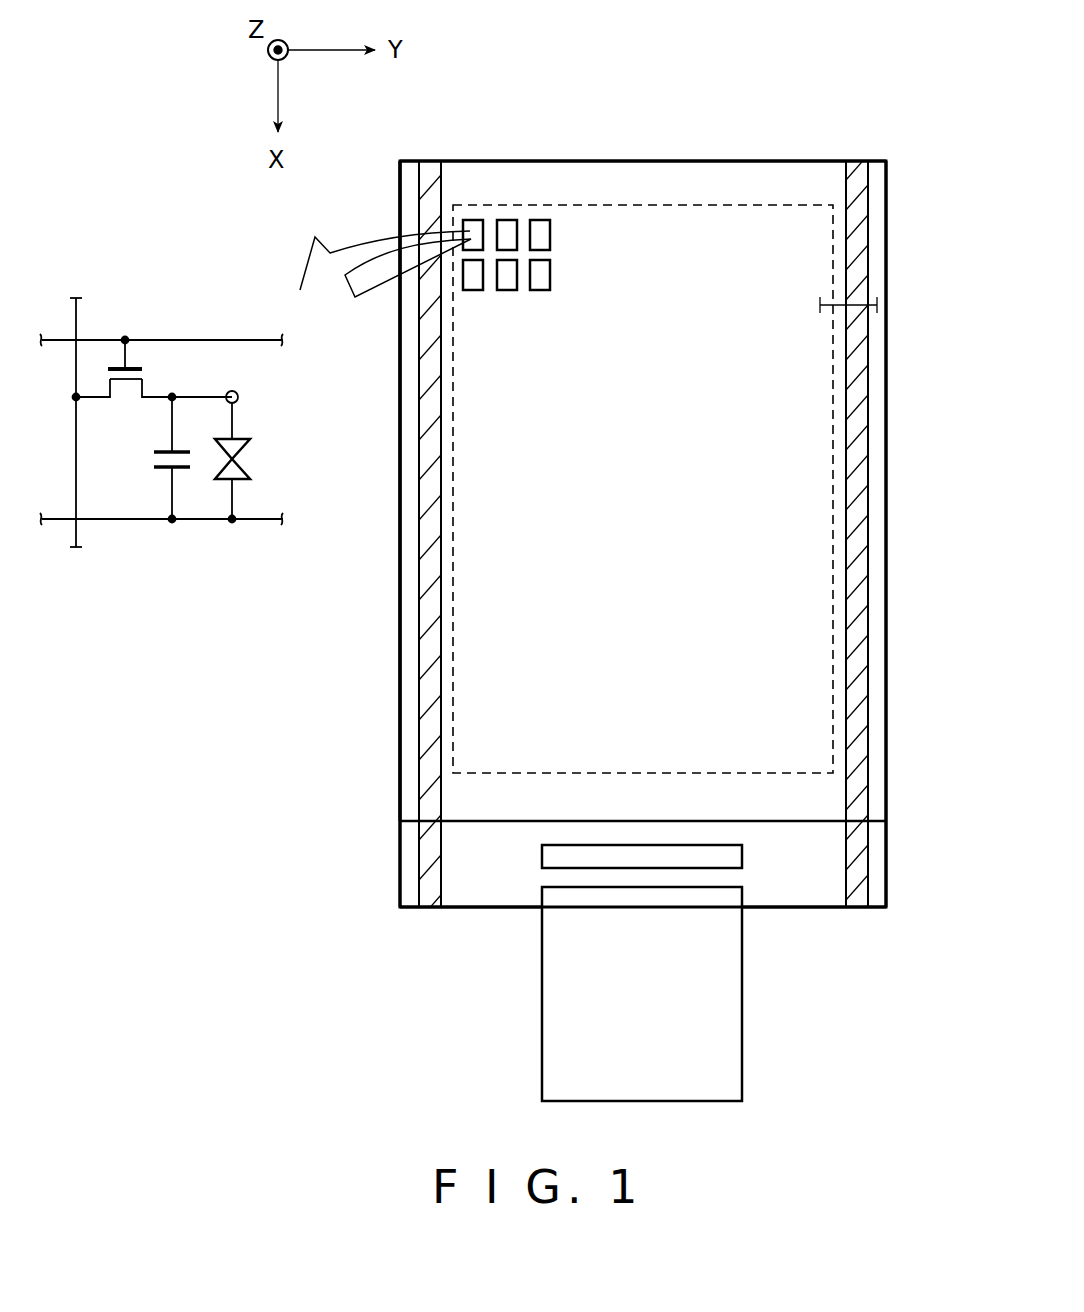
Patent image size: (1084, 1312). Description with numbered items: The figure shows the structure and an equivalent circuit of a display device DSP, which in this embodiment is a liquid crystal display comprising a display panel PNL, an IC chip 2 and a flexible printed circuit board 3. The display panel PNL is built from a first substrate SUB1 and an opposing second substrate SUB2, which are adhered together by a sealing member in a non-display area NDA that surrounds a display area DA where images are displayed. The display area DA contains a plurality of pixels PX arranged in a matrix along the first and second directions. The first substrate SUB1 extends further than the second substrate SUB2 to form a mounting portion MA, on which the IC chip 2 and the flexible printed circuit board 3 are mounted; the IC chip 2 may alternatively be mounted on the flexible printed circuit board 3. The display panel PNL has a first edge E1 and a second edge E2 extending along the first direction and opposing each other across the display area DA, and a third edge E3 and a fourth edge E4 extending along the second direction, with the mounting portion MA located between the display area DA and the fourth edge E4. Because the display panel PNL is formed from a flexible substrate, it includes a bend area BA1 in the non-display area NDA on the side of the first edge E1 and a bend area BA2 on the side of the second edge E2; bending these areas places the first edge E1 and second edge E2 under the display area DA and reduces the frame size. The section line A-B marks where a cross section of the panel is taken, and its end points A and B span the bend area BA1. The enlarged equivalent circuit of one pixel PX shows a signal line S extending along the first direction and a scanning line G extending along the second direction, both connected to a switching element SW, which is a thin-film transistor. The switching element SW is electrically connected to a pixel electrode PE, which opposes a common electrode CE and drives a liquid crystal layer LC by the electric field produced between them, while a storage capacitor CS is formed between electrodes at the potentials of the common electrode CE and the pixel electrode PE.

The display device DSP is at (618, 562).
The display panel PNL is at (618, 525).
The first substrate SUB1 is at (398, 867).
The second substrate SUB2 is at (398, 767).
The first edge E1 is at (888, 390).
The second edge E2 is at (399, 624).
The third edge E3 is at (535, 160).
The fourth edge E4 is at (835, 910).
The bend area BA1 is at (858, 528).
The bend area BA2 is at (425, 700).
The display area DA is at (633, 205).
The non-display area NDA is at (716, 186).
The pixel PX is at (553, 233).
The mounting portion MA is at (812, 872).
The line A-B A is at (845, 319).
The line A- B is at (875, 319).
The IC chip 2 is at (745, 857).
The flexible printed circuit board 3 is at (742, 1025).
The scanning line G is at (65, 338).
The signal line S is at (75, 455).
The common electrode CE is at (262, 523).
The switching element SW is at (152, 382).
The pixel electrode PE is at (240, 397).
The storage capacitor CS is at (150, 460).
The liquid crystal layer LC is at (255, 460).